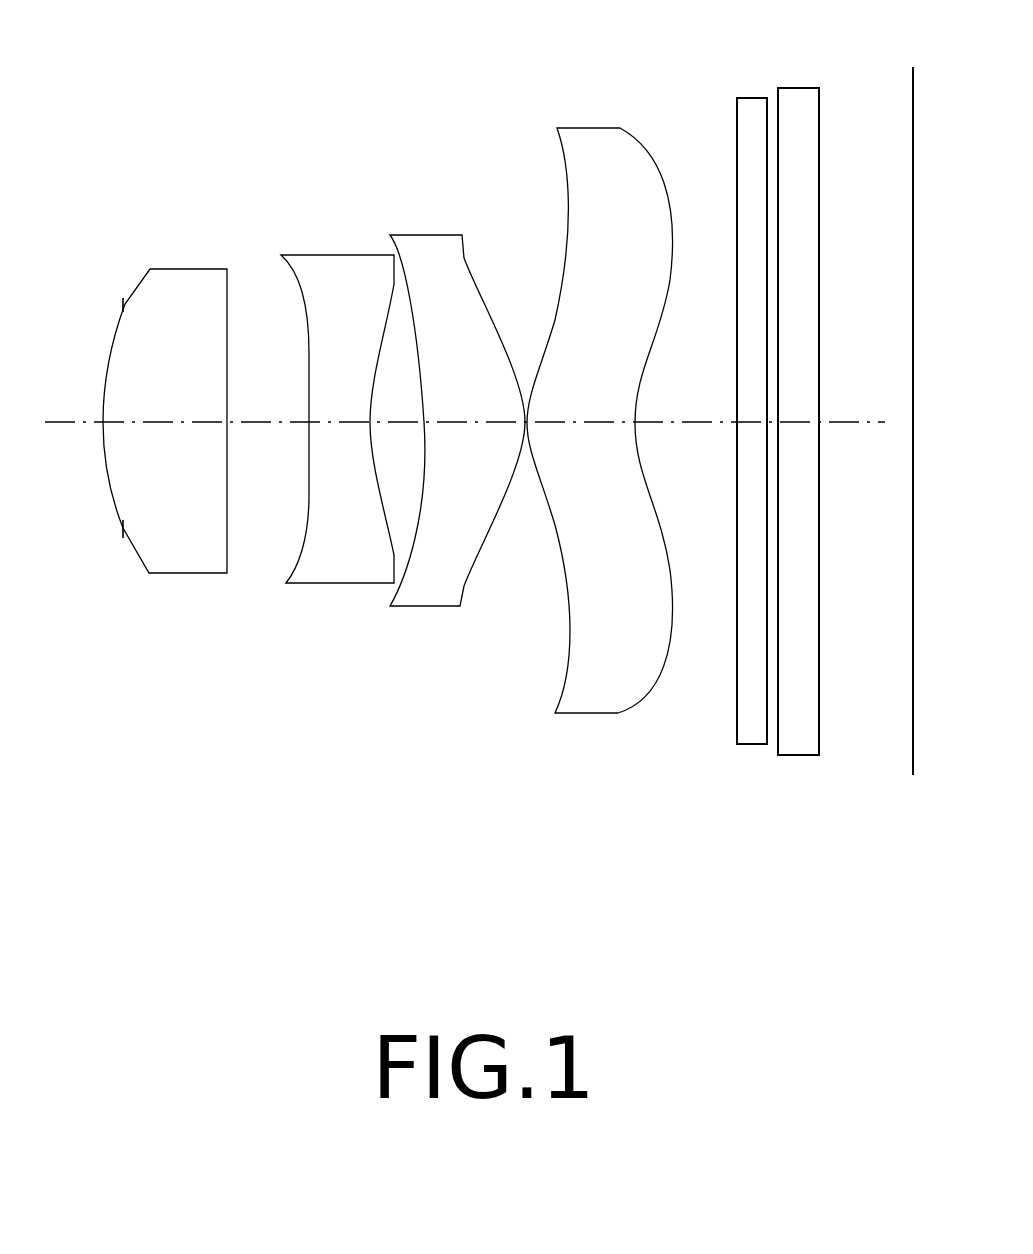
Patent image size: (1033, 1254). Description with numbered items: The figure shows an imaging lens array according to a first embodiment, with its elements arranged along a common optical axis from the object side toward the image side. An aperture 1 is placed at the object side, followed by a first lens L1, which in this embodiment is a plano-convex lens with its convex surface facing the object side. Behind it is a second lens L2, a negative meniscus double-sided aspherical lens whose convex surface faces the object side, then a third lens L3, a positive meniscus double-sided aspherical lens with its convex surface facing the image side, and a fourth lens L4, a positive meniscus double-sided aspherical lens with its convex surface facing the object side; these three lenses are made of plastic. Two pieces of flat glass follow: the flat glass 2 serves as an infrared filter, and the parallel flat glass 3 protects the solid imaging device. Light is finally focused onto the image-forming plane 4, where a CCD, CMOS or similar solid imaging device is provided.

The aperture 1 is at (124, 309).
The first lens L1 is at (167, 266).
The second lens L2 is at (315, 250).
The third lens L3 is at (422, 231).
The fourth lens L4 is at (577, 120).
The flat glass 2 is at (737, 98).
The flat glass 3 is at (798, 88).
The image-forming plane 4 is at (913, 97).